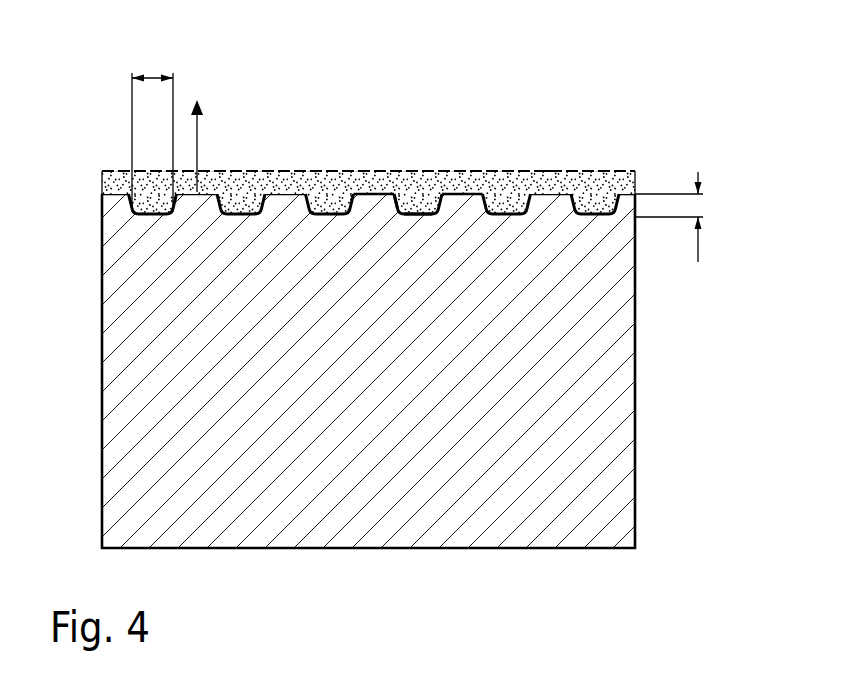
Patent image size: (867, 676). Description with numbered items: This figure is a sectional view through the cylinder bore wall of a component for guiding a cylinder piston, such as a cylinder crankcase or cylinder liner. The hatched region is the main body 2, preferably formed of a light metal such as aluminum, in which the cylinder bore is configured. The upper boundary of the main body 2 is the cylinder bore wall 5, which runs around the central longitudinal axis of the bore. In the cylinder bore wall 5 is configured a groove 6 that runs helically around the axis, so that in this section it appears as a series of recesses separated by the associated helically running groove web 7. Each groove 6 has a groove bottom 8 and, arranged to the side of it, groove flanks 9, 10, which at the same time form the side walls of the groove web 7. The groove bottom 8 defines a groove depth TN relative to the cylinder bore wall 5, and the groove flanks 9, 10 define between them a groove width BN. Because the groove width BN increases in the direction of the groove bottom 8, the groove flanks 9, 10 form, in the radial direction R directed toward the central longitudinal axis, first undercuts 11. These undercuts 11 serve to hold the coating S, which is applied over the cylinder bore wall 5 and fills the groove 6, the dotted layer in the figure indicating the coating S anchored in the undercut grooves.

The main body 2 is at (622, 418).
The cylinder bore wall 5 is at (569, 196).
The groove 6 is at (423, 195).
The groove web 7 is at (358, 187).
The groove bottom 8 is at (415, 212).
The groove flank 9 is at (401, 197).
The groove flank 10 is at (478, 184).
The first undercuts 11 is at (223, 206).
The coating S is at (550, 186).
The radial direction R is at (208, 143).
The groove width BN is at (152, 126).
The groove depth TN is at (688, 219).